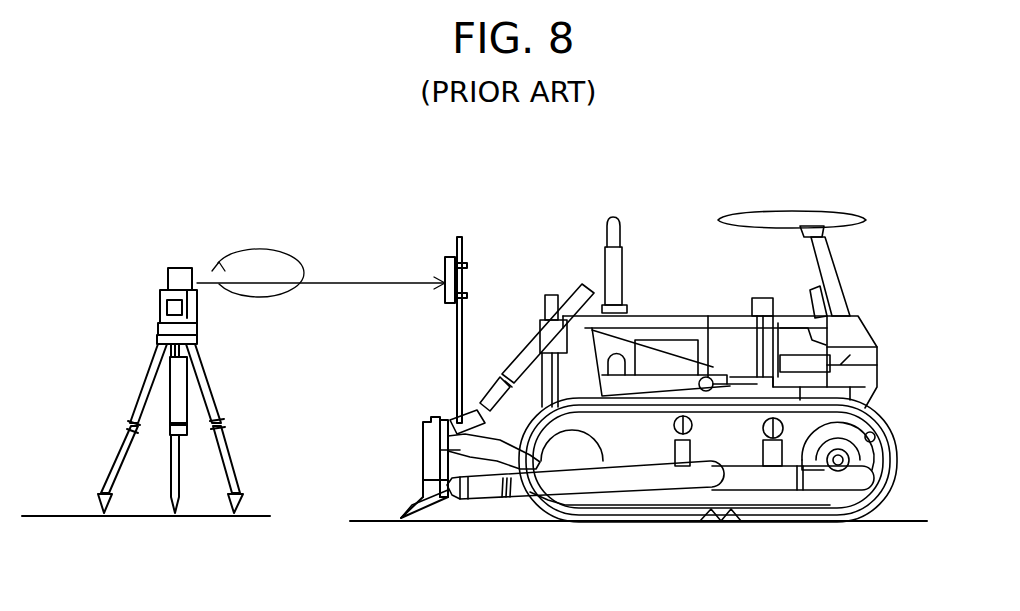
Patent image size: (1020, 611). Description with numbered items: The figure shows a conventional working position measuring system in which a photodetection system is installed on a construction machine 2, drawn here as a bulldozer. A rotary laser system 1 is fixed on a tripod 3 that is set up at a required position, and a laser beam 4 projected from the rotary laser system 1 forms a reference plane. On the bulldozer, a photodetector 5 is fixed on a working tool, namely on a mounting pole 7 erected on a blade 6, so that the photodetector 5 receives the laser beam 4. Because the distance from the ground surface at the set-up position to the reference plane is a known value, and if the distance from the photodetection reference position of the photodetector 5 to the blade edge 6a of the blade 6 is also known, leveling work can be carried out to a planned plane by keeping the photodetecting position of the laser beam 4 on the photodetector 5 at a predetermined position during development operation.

The rotary laser system 1 is at (179, 266).
The construction machine 2 is at (683, 268).
The tripod 3 is at (138, 392).
The laser beam 4 is at (292, 283).
The photodetector 5 is at (444, 258).
The blade 6 is at (423, 436).
The blade edge 6a is at (401, 518).
The mounting pole 7 is at (456, 356).